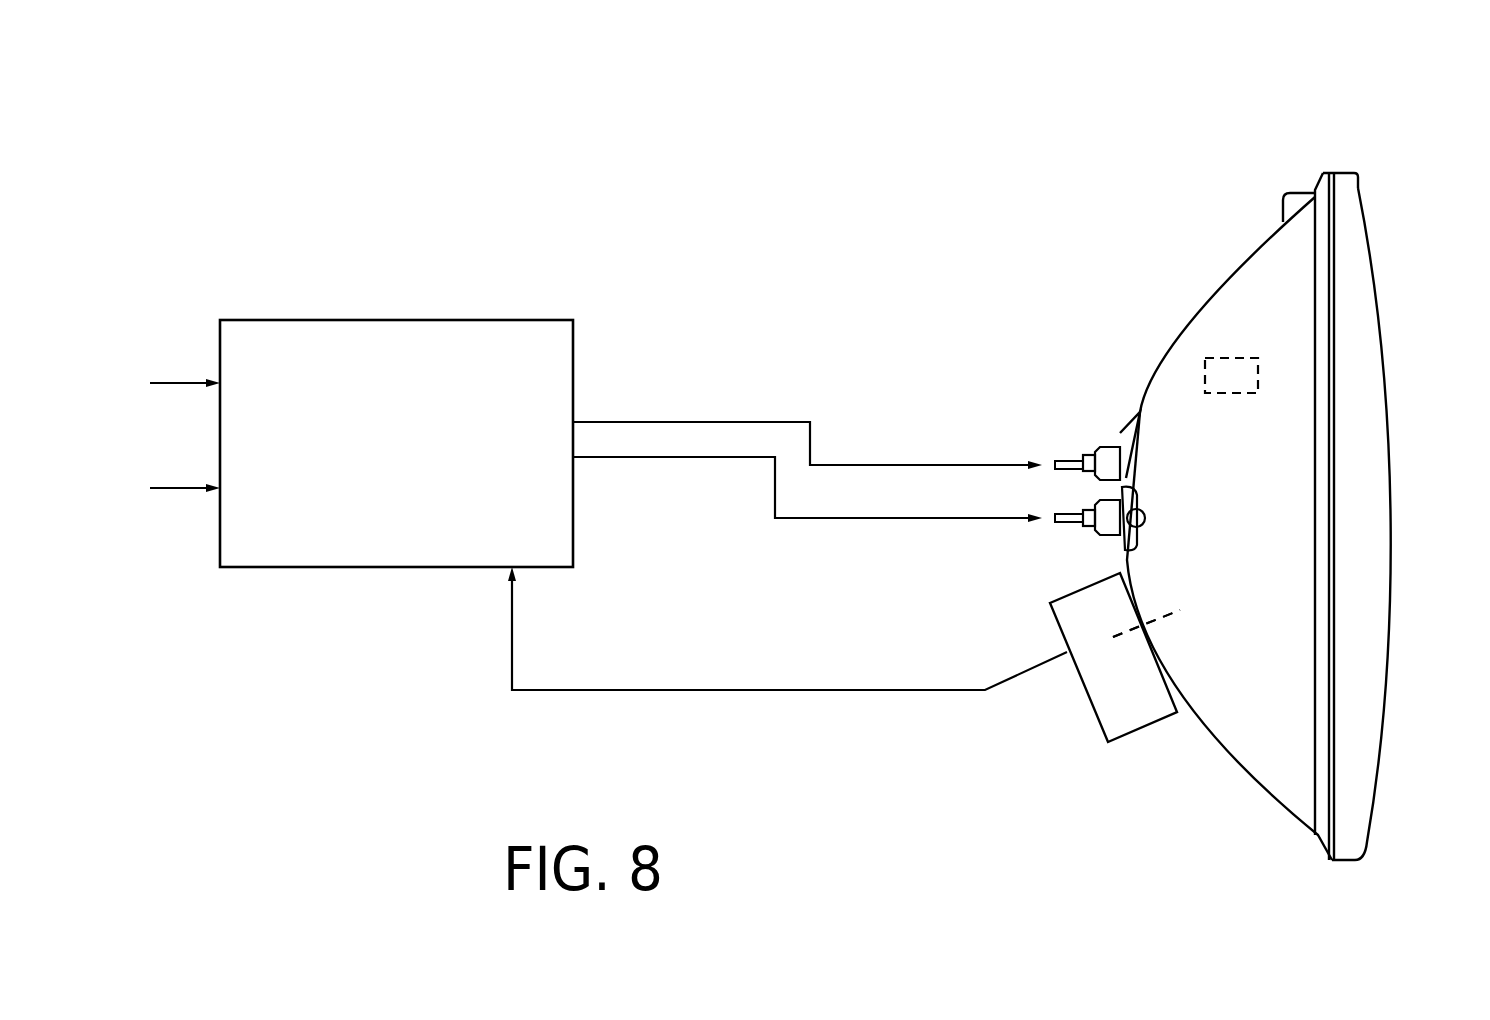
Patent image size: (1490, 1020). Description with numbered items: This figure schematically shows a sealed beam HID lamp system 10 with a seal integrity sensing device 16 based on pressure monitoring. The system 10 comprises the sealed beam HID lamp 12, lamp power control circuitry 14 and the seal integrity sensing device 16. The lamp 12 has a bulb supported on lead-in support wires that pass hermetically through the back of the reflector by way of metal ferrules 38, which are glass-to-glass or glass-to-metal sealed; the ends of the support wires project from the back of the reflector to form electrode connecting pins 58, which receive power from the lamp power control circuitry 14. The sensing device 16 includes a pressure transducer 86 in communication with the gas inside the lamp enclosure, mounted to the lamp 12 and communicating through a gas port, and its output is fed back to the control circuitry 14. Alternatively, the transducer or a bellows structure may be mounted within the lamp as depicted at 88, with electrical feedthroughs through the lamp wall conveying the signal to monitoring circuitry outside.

The system 10 is at (984, 133).
The sealed beam HID lamp 12 is at (1380, 310).
The lamp power control circuitry 14 is at (462, 330).
The seal integrity sensing device 16 is at (1024, 588).
The metal ferrules 38 is at (1107, 447).
The electrode connecting pins 58 is at (1066, 458).
The pressure transducer 86 is at (1082, 688).
The internally mounted transducer 88 is at (1222, 351).